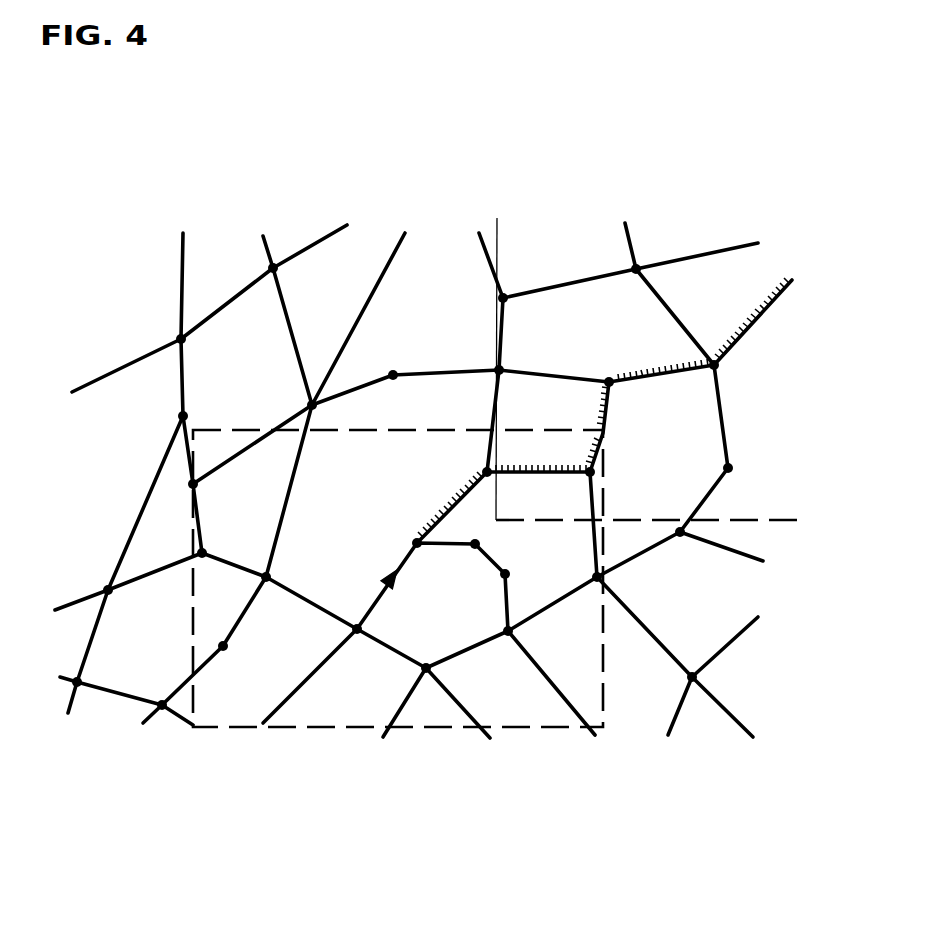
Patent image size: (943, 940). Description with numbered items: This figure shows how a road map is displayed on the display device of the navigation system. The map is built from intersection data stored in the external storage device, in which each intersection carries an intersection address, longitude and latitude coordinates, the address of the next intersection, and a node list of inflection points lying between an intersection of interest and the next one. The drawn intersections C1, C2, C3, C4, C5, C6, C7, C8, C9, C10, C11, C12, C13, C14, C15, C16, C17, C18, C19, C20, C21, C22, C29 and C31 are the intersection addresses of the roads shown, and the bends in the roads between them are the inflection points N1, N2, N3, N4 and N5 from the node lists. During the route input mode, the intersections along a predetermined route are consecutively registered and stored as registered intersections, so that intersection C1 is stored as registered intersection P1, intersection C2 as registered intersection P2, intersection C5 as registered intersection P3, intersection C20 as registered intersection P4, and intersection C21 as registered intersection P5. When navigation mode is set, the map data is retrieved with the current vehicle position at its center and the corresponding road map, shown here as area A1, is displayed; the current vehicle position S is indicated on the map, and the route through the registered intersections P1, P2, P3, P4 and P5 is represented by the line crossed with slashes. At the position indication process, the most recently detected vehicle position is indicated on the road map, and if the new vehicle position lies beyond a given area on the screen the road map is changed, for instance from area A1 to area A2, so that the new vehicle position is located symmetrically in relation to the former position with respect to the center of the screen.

The intersection address C1 is at (451, 563).
The intersection address C2 is at (527, 490).
The intersection address C3 is at (480, 357).
The intersection address C4 is at (481, 306).
The intersection address C5 is at (636, 477).
The intersection address C6 is at (592, 597).
The intersection address C7 is at (499, 648).
The intersection address C8 is at (423, 653).
The intersection address C9 is at (360, 651).
The intersection address C10 is at (292, 571).
The intersection address C11 is at (209, 572).
The intersection address C12 is at (216, 495).
The intersection address C13 is at (208, 405).
The intersection address C14 is at (207, 350).
The intersection address C15 is at (299, 279).
The intersection address C16 is at (129, 604).
The intersection address C17 is at (102, 669).
The intersection address C18 is at (153, 689).
The intersection address C19 is at (336, 423).
The intersection address C20 is at (658, 400).
The intersection address C21 is at (763, 378).
The intersection address C22 is at (622, 289).
The intersection address C29 is at (690, 552).
The intersection address C31 is at (664, 681).
The registered intersection P1 is at (451, 563).
The registered intersection P2 is at (527, 490).
The registered intersection P3 is at (636, 477).
The registered intersection P4 is at (658, 400).
The registered intersection P5 is at (763, 378).
The inflection point N1 is at (491, 534).
The inflection point N2 is at (525, 574).
The inflection point N3 is at (400, 359).
The inflection point N4 is at (748, 474).
The inflection point N5 is at (243, 659).
The current vehicle position S is at (392, 572).
The area A1 is at (565, 727).
The area A2 is at (768, 520).